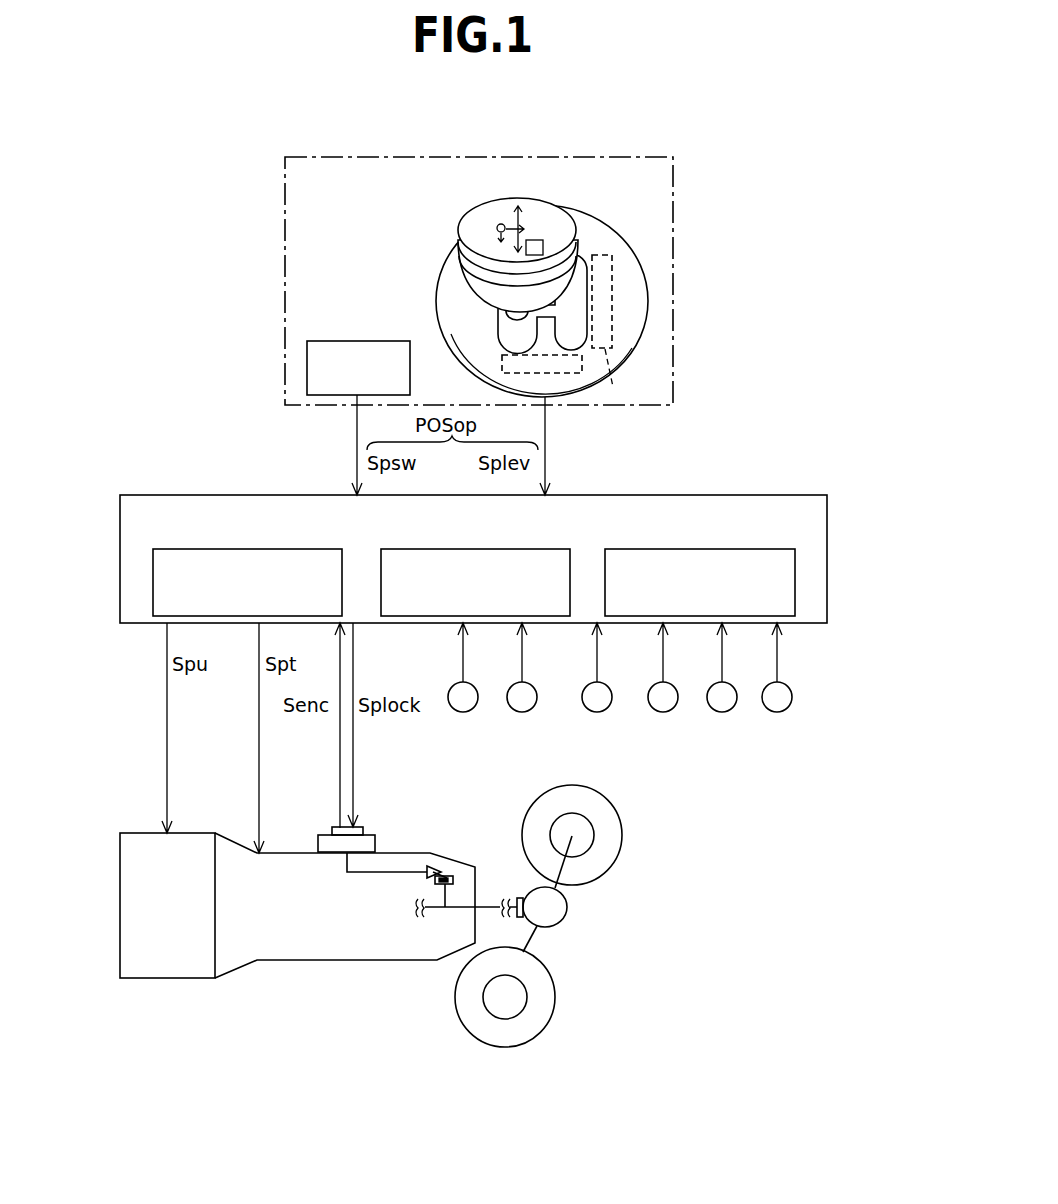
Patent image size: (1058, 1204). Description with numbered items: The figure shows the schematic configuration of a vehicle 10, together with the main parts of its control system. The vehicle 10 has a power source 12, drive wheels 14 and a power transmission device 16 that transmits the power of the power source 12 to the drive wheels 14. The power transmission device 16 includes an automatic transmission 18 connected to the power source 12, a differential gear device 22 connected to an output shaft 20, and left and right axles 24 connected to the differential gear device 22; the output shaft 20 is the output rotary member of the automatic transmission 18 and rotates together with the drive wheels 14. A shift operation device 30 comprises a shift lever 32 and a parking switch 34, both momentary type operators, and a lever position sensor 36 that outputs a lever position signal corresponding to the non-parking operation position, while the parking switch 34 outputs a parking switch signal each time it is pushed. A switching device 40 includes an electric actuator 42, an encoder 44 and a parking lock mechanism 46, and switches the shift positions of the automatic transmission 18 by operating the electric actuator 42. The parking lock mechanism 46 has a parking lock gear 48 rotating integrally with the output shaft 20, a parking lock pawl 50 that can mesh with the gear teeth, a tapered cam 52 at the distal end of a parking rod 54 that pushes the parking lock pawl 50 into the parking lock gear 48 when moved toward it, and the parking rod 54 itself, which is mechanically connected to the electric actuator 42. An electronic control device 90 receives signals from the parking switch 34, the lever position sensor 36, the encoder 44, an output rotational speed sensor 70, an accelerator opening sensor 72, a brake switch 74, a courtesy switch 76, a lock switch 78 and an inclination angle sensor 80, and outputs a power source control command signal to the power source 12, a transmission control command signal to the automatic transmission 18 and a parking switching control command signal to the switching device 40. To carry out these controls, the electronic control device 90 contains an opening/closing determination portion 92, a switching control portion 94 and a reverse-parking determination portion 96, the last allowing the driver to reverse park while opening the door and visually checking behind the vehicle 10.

The vehicle 10 is at (722, 146).
The power source 12 is at (150, 968).
The drive wheels 14 is at (592, 812).
The power transmission device 16 is at (277, 1006).
The automatic transmission 18 is at (285, 945).
The output shaft 20 is at (452, 912).
The differential gear device 22 is at (558, 912).
The axles 24 is at (557, 879).
The shift operation device 30 is at (484, 157).
The shift lever 32 is at (544, 282).
The parking switch 34 is at (322, 345).
The lever position sensor 36 is at (563, 368).
The switching device 40 is at (318, 815).
The electric actuator 42 is at (368, 838).
The encoder 44 is at (337, 829).
The parking lock mechanism 46 is at (466, 868).
The parking lock gear 48 is at (432, 882).
The parking lock pawl 50 is at (447, 875).
The cam 52 is at (437, 866).
The parking rod 54 is at (370, 875).
The output rotational speed sensor 70 is at (465, 710).
The accelerator opening sensor 72 is at (524, 710).
The brake switch 74 is at (599, 710).
The courtesy switch 76 is at (665, 710).
The lock switch 78 is at (724, 710).
The inclination angle sensor 80 is at (779, 710).
The electronic control device 90 is at (763, 505).
The opening/closing determination portion 92 is at (275, 557).
The switching control portion 94 is at (517, 557).
The reverse-parking determination portion 96 is at (703, 557).